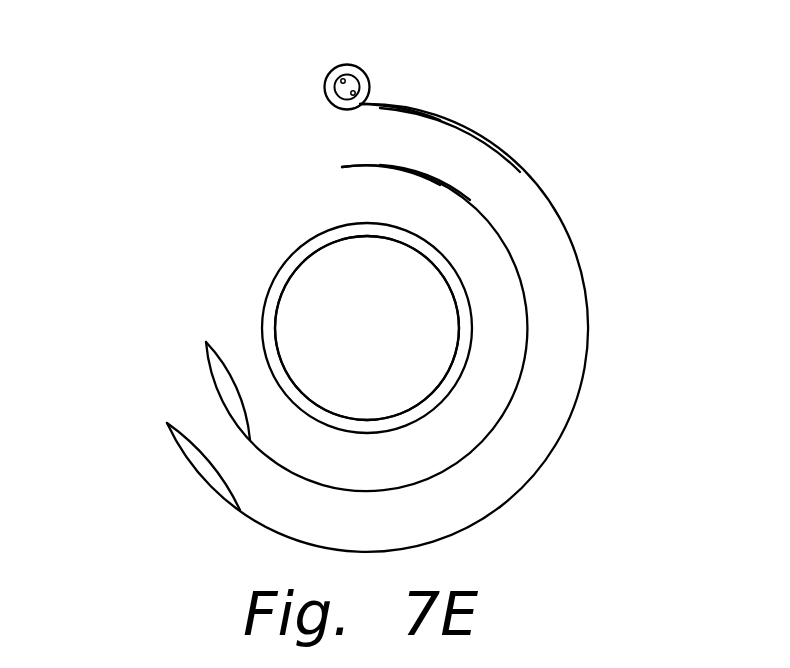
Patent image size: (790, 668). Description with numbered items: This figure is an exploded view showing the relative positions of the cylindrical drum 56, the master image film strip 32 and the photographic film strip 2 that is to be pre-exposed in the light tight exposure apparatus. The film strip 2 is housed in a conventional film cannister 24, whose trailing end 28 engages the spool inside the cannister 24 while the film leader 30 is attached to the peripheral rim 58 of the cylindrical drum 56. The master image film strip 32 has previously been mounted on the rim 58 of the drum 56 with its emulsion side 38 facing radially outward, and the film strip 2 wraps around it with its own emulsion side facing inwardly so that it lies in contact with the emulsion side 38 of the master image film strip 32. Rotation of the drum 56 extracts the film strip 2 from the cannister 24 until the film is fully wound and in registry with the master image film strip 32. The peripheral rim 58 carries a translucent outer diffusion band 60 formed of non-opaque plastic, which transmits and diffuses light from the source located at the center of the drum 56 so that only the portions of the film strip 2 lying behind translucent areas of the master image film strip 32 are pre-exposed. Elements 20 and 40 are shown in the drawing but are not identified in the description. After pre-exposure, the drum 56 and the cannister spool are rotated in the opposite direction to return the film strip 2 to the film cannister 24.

The film strip 2 is at (543, 197).
The optical fiber unit 20 is at (372, 103).
The film cannister 24 is at (338, 84).
The trailing end 28 is at (193, 466).
The film leader 30 is at (452, 122).
The master image film strip 32 is at (357, 165).
The emulsion side of master image film strip 38 is at (217, 392).
The band end 40 is at (388, 167).
The cylindrical drum 56 is at (353, 328).
The peripheral rim 58 is at (265, 307).
The translucent outer diffusion band 60 is at (270, 344).